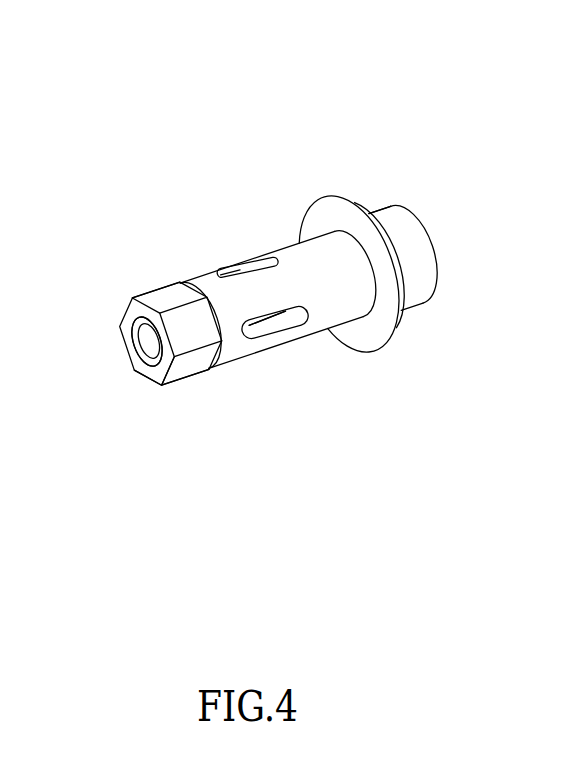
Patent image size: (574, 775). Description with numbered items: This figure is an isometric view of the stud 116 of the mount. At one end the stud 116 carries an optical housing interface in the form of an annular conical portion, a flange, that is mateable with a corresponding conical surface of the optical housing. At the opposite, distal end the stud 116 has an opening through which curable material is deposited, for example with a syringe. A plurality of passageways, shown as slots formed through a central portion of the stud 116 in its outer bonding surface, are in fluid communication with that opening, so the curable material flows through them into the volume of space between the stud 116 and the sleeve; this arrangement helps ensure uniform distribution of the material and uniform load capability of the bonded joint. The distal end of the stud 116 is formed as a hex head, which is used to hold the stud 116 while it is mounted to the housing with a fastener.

The stud 116 is at (305, 102).